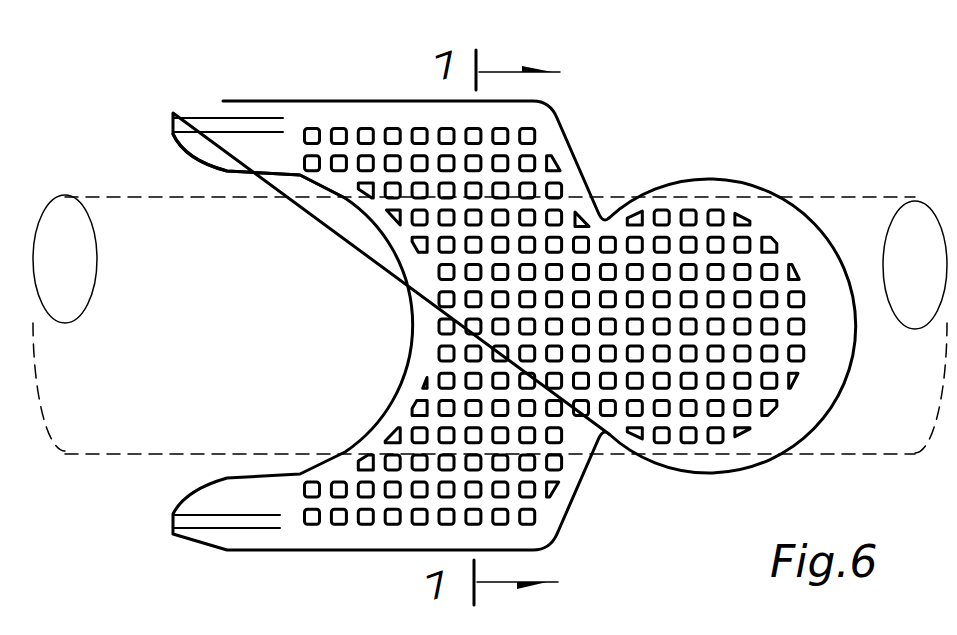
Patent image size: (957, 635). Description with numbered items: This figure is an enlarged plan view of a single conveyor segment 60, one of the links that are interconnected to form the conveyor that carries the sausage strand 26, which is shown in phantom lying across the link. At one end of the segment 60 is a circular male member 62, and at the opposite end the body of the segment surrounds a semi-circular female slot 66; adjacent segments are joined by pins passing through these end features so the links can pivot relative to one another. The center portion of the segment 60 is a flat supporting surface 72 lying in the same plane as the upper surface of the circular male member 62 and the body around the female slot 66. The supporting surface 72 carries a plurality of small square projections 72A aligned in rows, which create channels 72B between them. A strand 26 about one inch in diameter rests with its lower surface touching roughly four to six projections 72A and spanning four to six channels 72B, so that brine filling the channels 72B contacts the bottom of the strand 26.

The sausage strand 26 is at (139, 198).
The conveyor segment 60 is at (287, 97).
The circular male member 62 is at (748, 196).
The semi-circular female slot 66 is at (296, 182).
The flat supporting surface 72 is at (342, 122).
The projections 72A is at (441, 129).
The channels 72B is at (534, 150).